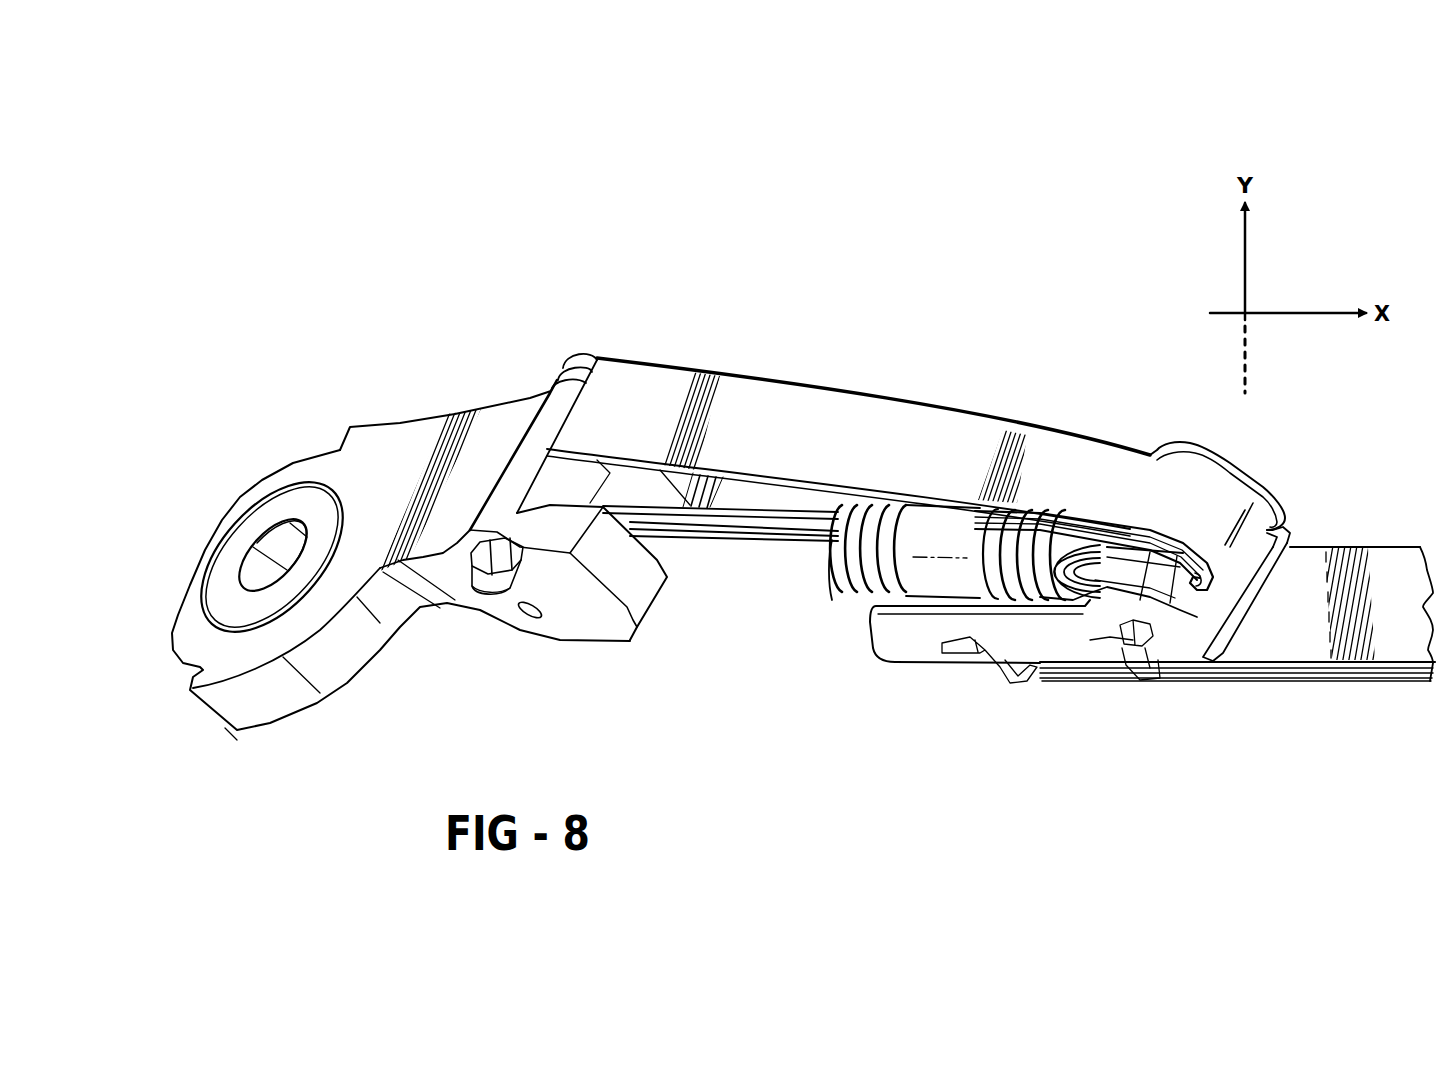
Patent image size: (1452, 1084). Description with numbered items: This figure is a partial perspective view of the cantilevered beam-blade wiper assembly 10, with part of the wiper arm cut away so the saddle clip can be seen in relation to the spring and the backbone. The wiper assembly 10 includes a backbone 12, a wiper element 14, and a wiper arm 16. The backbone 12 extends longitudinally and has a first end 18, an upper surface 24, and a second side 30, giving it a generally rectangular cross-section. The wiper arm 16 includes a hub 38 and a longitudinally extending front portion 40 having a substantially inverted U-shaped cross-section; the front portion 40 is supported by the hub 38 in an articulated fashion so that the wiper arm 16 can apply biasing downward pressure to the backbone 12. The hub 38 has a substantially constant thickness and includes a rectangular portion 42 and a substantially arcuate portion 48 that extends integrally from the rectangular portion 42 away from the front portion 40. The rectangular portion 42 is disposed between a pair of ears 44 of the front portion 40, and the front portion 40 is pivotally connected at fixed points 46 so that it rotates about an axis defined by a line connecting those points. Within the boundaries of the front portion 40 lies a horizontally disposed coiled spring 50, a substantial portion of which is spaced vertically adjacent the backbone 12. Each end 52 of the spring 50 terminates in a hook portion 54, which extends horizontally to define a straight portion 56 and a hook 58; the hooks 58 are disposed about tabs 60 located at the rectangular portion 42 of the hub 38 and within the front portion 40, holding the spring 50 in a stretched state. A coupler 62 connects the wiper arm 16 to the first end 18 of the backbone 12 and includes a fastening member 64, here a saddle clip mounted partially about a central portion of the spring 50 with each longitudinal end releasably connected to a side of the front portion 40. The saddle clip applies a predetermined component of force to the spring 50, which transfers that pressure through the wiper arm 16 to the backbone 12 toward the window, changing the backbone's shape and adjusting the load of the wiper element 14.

The wiper assembly 10 is at (797, 260).
The backbone 12 is at (1272, 664).
The wiper element 14 is at (1385, 679).
The wiper arm 16 is at (607, 316).
The first end 18 is at (1400, 546).
The upper surface 24 is at (1375, 560).
The second side 30 is at (1332, 674).
The hub 38 is at (342, 445).
The front portion 40 is at (928, 408).
The rectangular portion 42 is at (412, 448).
The ears 44 is at (560, 376).
The fixed points 46 is at (488, 580).
The arcuate portion 48 is at (210, 528).
The coiled spring 50 is at (878, 597).
The end 52 is at (1187, 590).
The hook portion 54 is at (760, 510).
The straight portion 56 is at (730, 541).
The hook 58 is at (1272, 533).
The tabs 60 is at (1222, 652).
The coupler 62 is at (1062, 668).
The fastening member 64 is at (948, 532).